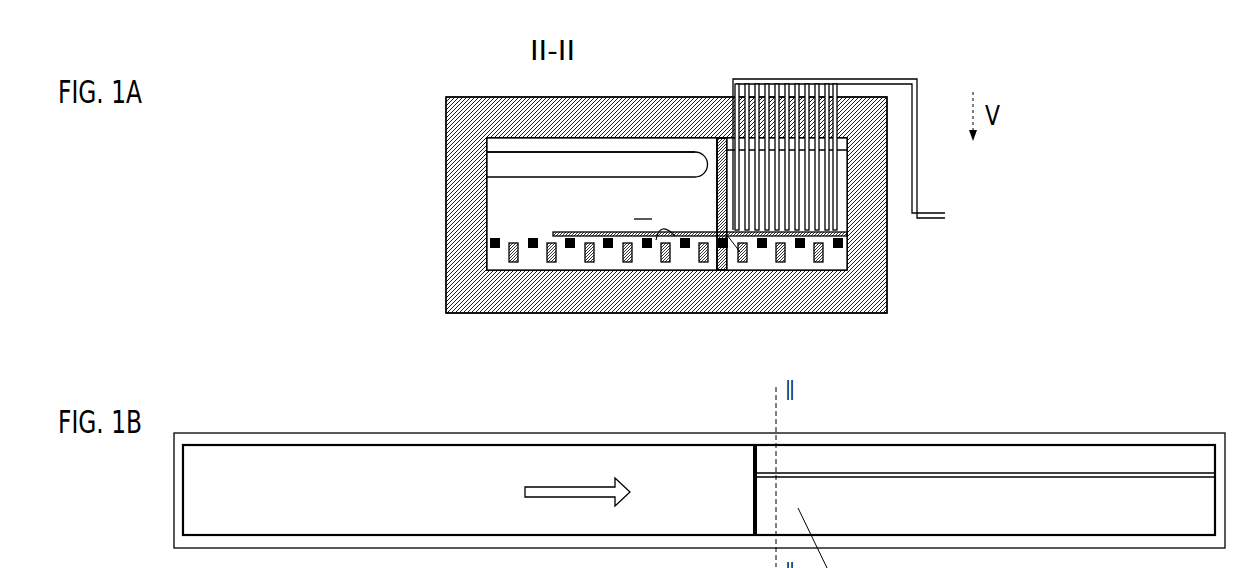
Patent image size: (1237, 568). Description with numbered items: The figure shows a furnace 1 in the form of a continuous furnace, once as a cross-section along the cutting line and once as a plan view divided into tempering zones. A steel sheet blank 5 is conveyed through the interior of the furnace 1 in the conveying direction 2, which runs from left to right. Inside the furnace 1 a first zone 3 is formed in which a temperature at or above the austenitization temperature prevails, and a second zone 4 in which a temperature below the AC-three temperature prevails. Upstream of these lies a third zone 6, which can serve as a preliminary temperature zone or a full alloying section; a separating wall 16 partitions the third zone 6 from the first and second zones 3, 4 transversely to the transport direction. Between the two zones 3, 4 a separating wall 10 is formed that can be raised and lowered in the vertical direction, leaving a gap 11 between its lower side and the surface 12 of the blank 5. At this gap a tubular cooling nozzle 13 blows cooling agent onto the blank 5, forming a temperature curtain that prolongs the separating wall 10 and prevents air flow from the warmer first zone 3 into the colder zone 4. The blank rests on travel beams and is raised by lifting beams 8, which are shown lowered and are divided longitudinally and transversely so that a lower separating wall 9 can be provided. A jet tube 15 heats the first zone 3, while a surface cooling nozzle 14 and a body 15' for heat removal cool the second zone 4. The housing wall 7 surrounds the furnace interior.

In FIG. 1A, the furnace 1 is at (874, 61).
In FIG. 1B, the furnace 1 is at (1126, 412).
In FIG. 1B, the conveying direction 2 is at (540, 485).
In FIG. 1A, the first zone 3 is at (602, 204).
In FIG. 1A, the second zone 4 is at (840, 215).
In FIG. 1B, the second zone 4 is at (795, 462).
In FIG. 1A, the steel sheet blank 5 is at (553, 235).
In FIG. 1B, the third zone 6 is at (660, 480).
In FIG. 1A, the housing wall 7 is at (487, 250).
In FIG. 1A, the lifting beams 8 is at (513, 258).
In FIG. 1A, the lower separating wall 9 is at (719, 266).
In FIG. 1A, the separating wall 10 is at (720, 163).
In FIG. 1B, the separating wall 10 is at (863, 473).
In FIG. 1A, the gap 11 is at (713, 232).
In FIG. 1A, the surface 12 is at (656, 240).
In FIG. 1A, the tubular cooling nozzle 13 is at (728, 236).
In FIG. 1A, the surface cooling nozzle 14 is at (783, 78).
In FIG. 1A, the jet tube 15 is at (564, 101).
In FIG. 1A, the body for heat removal 15' is at (851, 173).
In FIG. 1B, the separating wall 16 is at (753, 492).